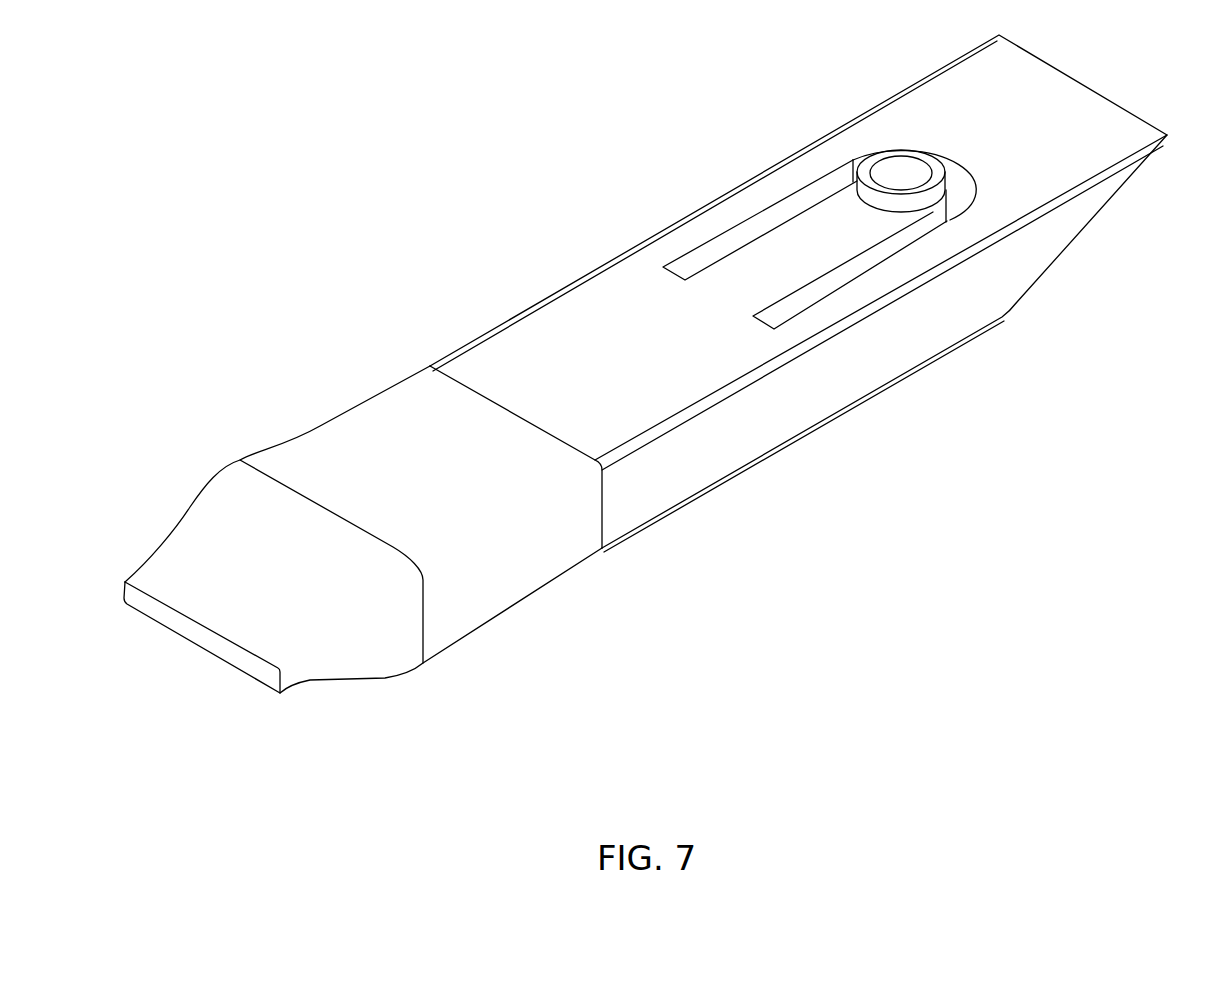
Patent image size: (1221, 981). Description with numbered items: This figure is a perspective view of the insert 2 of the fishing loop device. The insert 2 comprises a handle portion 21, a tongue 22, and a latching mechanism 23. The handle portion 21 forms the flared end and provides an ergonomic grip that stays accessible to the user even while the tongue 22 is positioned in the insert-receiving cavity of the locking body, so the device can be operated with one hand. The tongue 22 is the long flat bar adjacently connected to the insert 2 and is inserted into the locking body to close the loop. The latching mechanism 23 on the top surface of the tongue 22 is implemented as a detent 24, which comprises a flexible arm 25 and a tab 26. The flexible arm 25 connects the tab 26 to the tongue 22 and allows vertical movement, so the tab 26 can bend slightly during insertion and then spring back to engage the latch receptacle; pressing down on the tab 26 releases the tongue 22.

The insert 2 is at (645, 364).
The handle portion 21 is at (512, 573).
The tongue 22 is at (780, 427).
The latching mechanism 23 is at (854, 196).
The detent 24 is at (975, 142).
The flexible arm 25 is at (759, 249).
The tab 26 is at (887, 175).